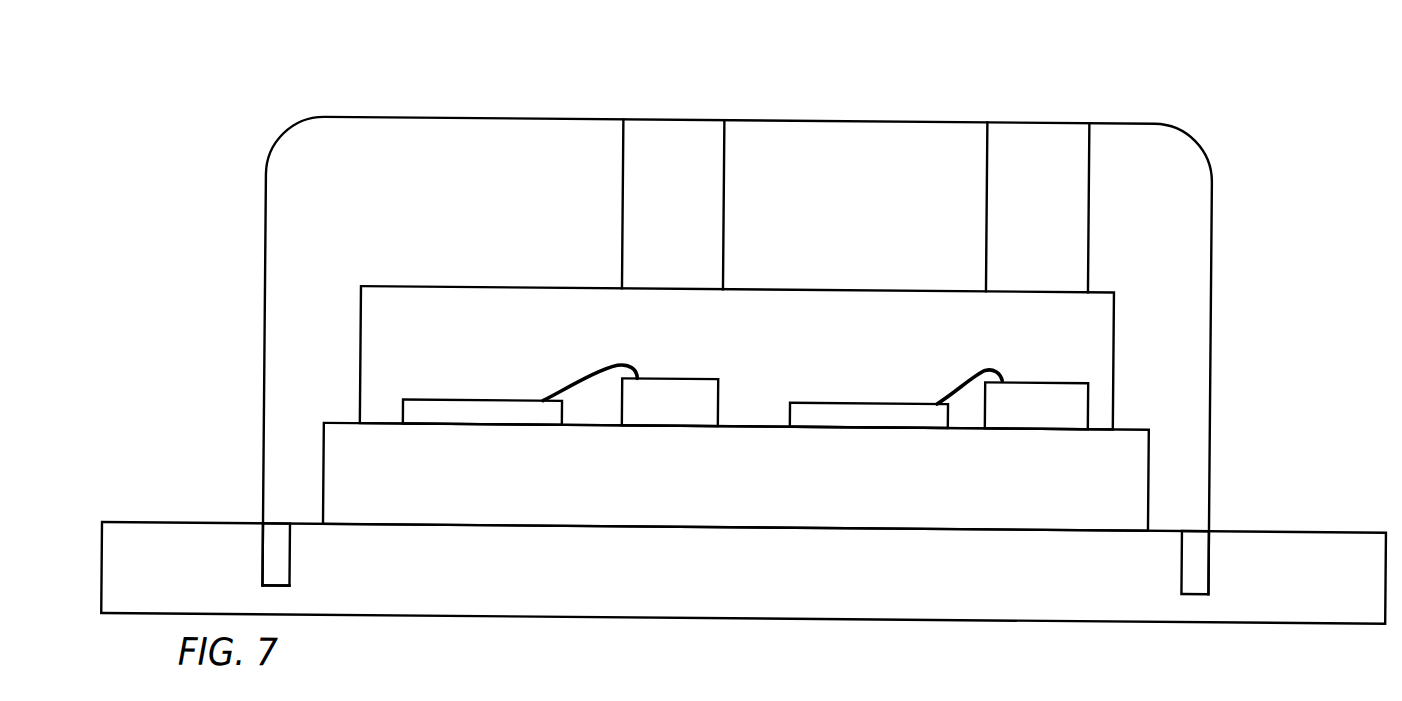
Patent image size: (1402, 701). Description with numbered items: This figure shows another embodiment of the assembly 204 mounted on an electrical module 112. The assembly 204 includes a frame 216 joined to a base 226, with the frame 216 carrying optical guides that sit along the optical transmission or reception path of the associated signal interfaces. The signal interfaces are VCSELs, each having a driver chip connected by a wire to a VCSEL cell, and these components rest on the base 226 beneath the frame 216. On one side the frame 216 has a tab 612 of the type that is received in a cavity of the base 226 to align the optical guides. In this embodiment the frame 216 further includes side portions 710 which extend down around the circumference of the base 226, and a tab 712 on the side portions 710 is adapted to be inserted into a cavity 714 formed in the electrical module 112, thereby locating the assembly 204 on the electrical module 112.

The electrical module 112 is at (1378, 602).
The assembly 204 is at (214, 78).
The frame 216 is at (1121, 115).
The base 226 is at (753, 511).
The tabs 612 is at (1193, 554).
The side portions 710 is at (239, 459).
The tab 712 is at (275, 553).
The cavities 714 is at (262, 578).